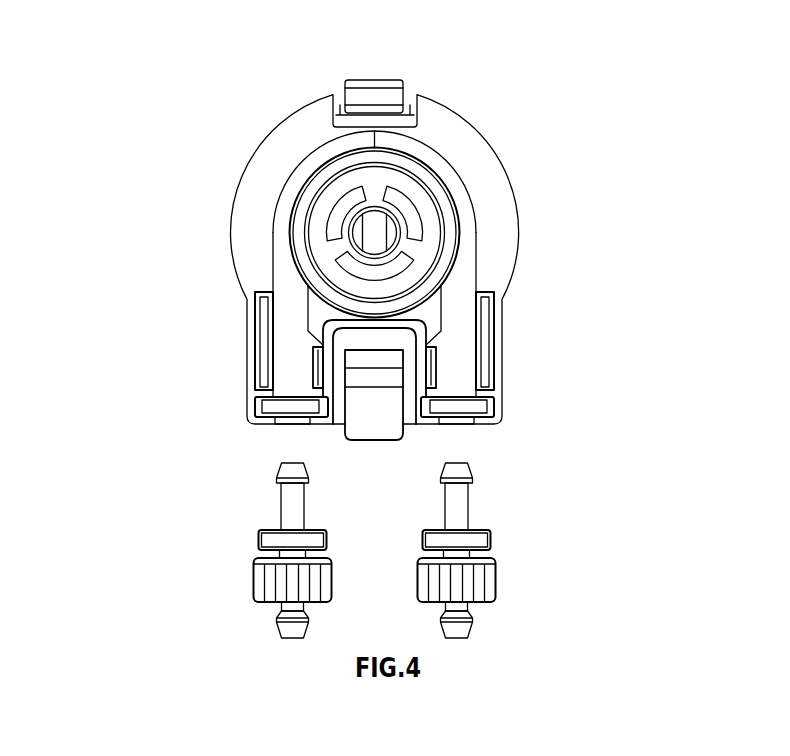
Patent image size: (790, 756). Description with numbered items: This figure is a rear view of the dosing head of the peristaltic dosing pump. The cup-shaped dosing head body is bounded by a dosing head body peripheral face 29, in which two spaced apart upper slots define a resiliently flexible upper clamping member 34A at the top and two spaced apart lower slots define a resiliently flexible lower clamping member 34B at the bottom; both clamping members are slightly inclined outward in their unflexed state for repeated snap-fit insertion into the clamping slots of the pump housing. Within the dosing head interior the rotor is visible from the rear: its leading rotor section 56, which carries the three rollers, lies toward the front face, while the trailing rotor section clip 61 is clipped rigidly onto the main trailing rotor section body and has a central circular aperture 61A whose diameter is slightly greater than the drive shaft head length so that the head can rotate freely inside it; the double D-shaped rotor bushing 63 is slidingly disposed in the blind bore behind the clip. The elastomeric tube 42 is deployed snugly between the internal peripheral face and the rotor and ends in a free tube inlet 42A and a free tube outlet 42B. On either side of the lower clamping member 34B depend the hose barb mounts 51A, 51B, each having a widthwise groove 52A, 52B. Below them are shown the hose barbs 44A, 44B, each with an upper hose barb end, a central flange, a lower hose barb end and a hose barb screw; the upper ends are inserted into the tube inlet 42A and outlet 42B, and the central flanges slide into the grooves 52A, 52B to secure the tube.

The dosing head body peripheral face 29 is at (472, 136).
The upper clamping member 34A is at (377, 100).
The lower clamping member 34B is at (374, 393).
The elastomeric tube 42 is at (469, 281).
The free tube inlet 42A is at (295, 357).
The free tube outlet 42B is at (464, 376).
The hose barb 44A is at (228, 559).
The hose barb 44B is at (530, 559).
The hose barb mount 51A is at (247, 382).
The hose barb mount 51B is at (501, 396).
The widthwise groove 52A is at (256, 422).
The widthwise groove 52B is at (502, 425).
The leading rotor section 56 is at (297, 238).
The trailing rotor section clip 61 is at (431, 219).
The central circular aperture 61A is at (399, 245).
The double D-shaped rotor bushing 63 is at (373, 233).